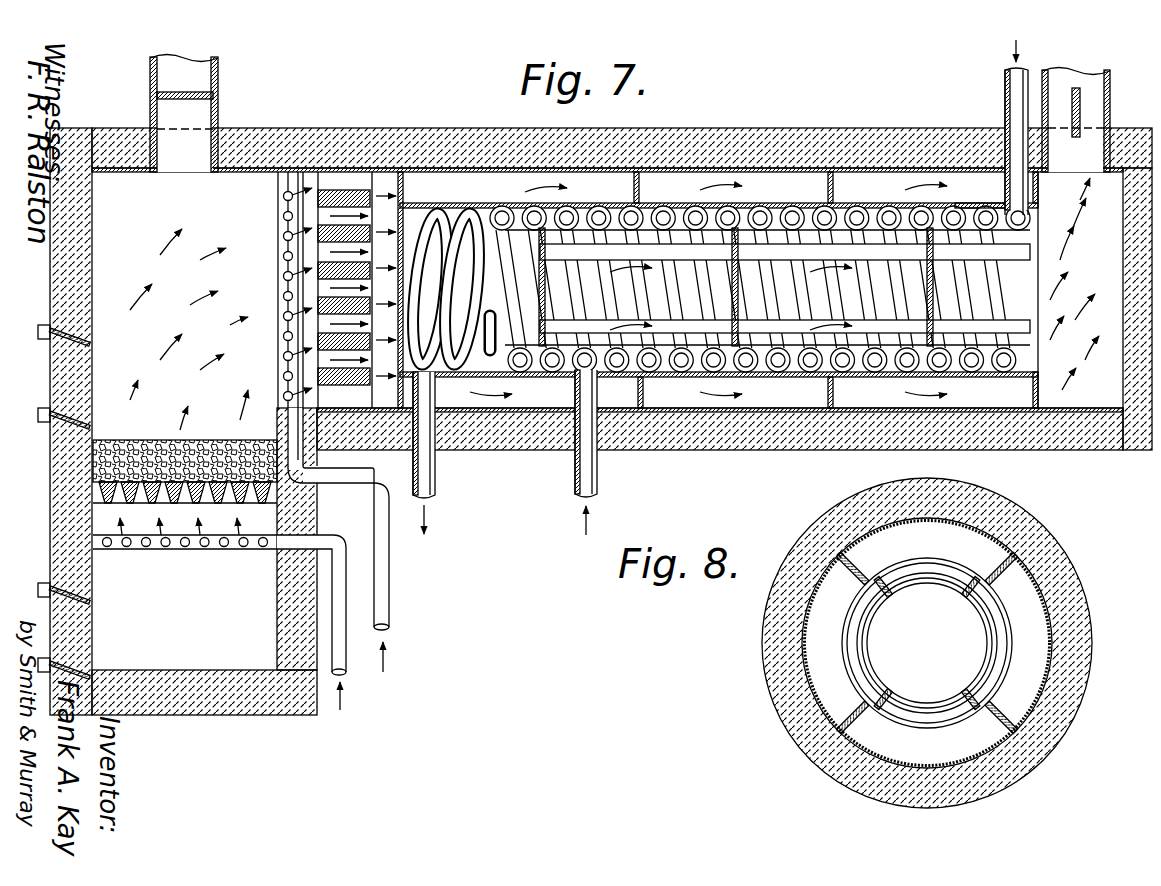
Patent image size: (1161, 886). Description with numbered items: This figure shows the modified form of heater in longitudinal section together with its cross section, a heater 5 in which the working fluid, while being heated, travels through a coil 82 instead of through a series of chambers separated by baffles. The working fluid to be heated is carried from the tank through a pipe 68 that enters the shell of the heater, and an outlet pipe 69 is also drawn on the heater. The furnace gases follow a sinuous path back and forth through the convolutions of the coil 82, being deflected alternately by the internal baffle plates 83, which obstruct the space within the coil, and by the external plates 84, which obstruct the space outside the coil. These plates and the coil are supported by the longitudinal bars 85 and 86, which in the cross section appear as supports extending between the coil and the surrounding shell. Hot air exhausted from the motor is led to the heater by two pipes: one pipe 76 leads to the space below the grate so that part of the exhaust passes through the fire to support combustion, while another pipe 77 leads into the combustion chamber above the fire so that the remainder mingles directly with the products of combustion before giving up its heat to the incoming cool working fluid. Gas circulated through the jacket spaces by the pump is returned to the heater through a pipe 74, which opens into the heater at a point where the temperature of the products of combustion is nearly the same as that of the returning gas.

In FIG. 7, the furnace casing 5 is at (817, 395).
In FIG. 7, the pipe 68 is at (1008, 90).
In FIG. 7, the outlet pipe 69 is at (427, 472).
In FIG. 7, the pipe 74 is at (588, 476).
In FIG. 7, the pipe 76 is at (283, 543).
In FIG. 7, the pipe 77 is at (286, 352).
In FIG. 7, the coil 82 is at (762, 210).
In FIG. 8, the coil 82 is at (853, 643).
In FIG. 7, the internal baffle plates 83 is at (543, 283).
In FIG. 8, the internal baffle plates 83 is at (882, 660).
In FIG. 7, the external plates 84 is at (638, 188).
In FIG. 8, the external plates 84 is at (803, 603).
In FIG. 7, the longitudinal bar 85 is at (878, 255).
In FIG. 8, the longitudinal bar 85 is at (892, 614).
In FIG. 7, the longitudinal bar 86 is at (975, 208).
In FIG. 8, the longitudinal bar 86 is at (1007, 573).